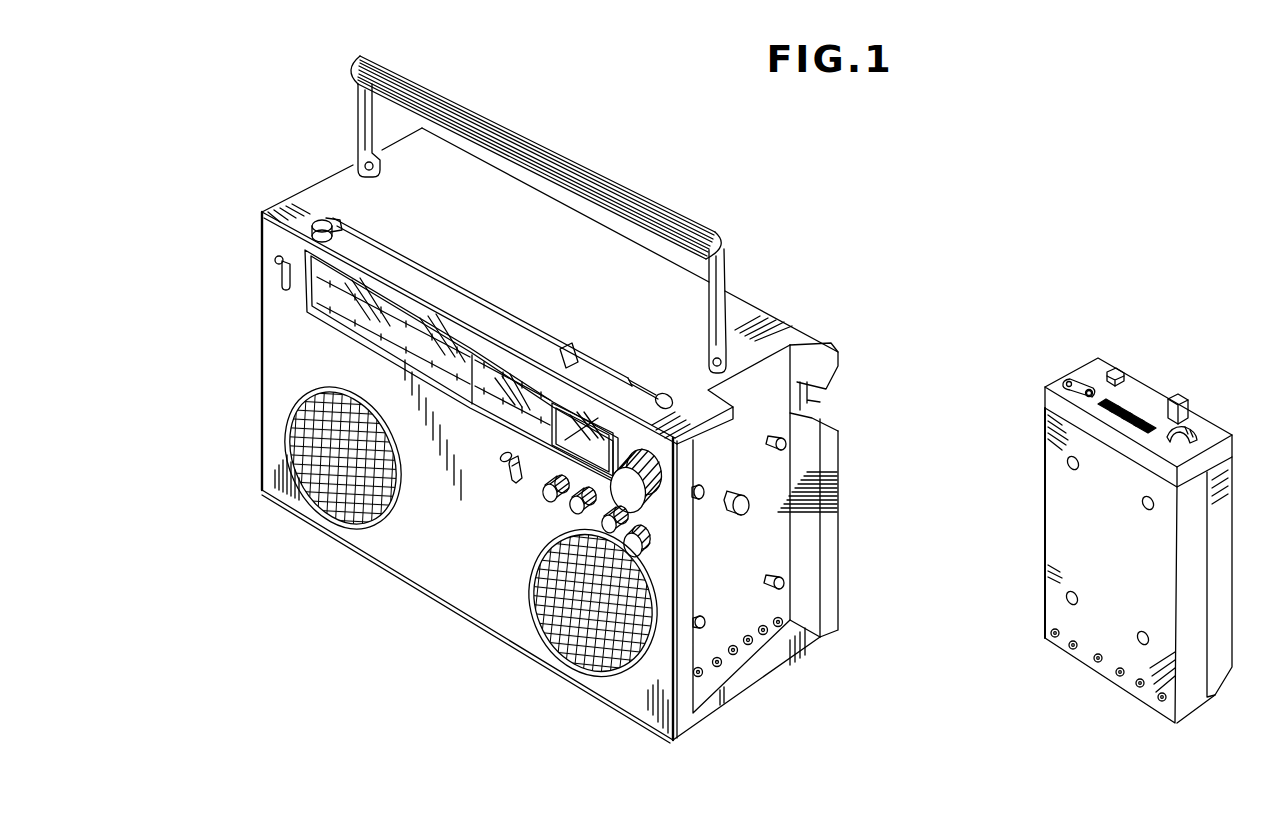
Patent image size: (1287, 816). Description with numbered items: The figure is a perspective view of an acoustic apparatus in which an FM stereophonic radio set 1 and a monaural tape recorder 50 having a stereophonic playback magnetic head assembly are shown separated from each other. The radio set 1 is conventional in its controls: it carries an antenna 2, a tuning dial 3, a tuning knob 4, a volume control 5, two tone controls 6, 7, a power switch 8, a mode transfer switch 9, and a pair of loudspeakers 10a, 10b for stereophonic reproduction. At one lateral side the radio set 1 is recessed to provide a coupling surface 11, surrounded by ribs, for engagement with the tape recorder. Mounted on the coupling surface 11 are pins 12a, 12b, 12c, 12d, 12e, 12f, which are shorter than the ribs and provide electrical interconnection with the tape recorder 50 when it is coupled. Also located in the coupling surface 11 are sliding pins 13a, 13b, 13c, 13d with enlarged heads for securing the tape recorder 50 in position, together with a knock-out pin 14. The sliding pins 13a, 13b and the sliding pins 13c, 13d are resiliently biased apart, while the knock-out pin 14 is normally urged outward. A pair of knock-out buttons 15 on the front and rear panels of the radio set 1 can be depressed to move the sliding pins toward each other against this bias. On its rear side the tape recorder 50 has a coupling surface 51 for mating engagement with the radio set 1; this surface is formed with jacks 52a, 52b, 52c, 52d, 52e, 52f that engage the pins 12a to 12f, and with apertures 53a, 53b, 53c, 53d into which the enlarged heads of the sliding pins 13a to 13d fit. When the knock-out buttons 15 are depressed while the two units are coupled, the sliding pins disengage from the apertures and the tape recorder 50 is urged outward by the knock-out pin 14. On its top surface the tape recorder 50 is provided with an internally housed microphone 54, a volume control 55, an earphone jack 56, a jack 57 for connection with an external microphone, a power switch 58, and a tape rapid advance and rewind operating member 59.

The FM stereophonic radio set 1 is at (250, 338).
The antenna 2 is at (365, 222).
The tuning dial 3 is at (318, 318).
The tuning knob 4 is at (645, 505).
The volume control 5 is at (600, 527).
The tone control 6 is at (568, 508).
The tone control 7 is at (543, 497).
The power switch 8 is at (505, 462).
The mode transfer switch 9 is at (275, 258).
The loudspeaker 10a is at (560, 628).
The loudspeaker 10b is at (322, 503).
The coupling surface 11 is at (782, 458).
The pin 12a is at (700, 676).
The pin 12b is at (719, 665).
The pin 12c is at (735, 653).
The pin 12d is at (750, 643).
The pin 12e is at (765, 633).
The pin 12f is at (781, 626).
The sliding pin 13a is at (701, 490).
The sliding pin 13b is at (704, 623).
The sliding pin 13c is at (788, 442).
The sliding pin 13d is at (781, 582).
The knock-out pin 14 is at (748, 507).
The knock-out button 15 is at (637, 556).
The monaural tape recorder 50 is at (1032, 503).
The coupling surface 51 is at (1045, 540).
The jack 52a is at (1162, 701).
The jack 52b is at (1138, 687).
The jack 52c is at (1118, 676).
The jack 52d is at (1095, 661).
The jack 52e is at (1070, 647).
The jack 52f is at (1051, 633).
The aperture 53a is at (1155, 507).
The aperture 53b is at (1150, 637).
The aperture 53c is at (1067, 462).
The aperture 53d is at (1066, 598).
The internally housed microphone 54 is at (1126, 408).
The volume control 55 is at (1198, 438).
The earphone jack 56 is at (1088, 391).
The external microphone jack 57 is at (1066, 383).
The power switch 58 is at (1113, 372).
The tape rapid advance and rewind operating member 59 is at (1189, 400).